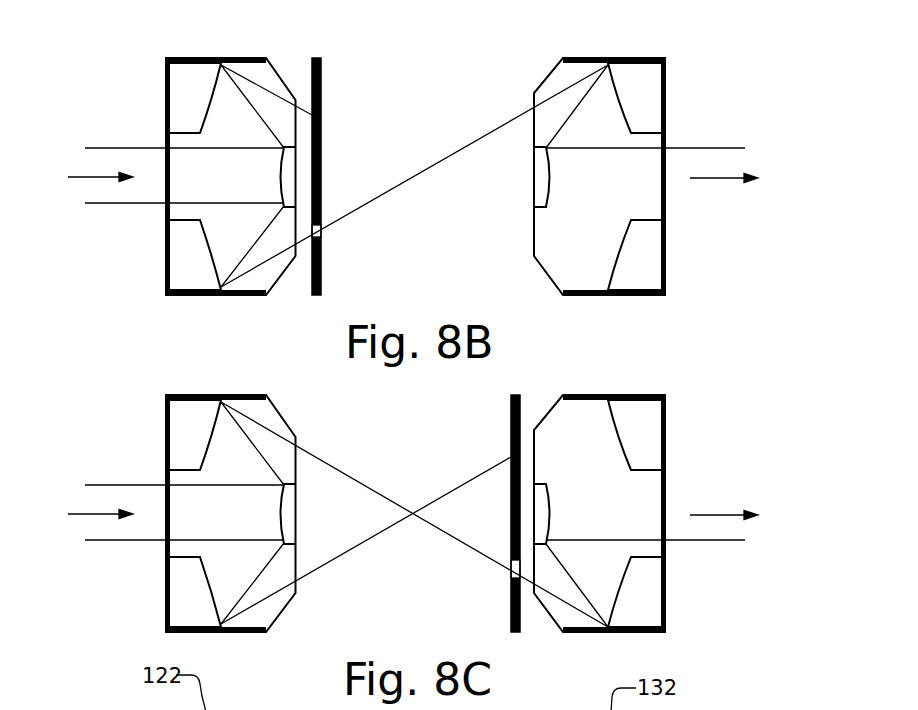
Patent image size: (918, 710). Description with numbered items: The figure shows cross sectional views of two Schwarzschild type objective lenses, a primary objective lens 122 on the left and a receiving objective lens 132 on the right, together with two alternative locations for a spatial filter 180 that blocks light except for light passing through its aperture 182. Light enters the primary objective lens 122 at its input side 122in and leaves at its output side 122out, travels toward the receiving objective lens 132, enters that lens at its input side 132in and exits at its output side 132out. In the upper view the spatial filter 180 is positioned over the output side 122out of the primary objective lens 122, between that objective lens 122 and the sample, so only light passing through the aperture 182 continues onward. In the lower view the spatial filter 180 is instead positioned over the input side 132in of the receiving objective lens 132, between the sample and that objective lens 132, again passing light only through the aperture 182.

In FIG. 8B, the primary objective lens 122 is at (228, 58).
In FIG. 8C, the primary objective lens 122 is at (228, 395).
In FIG. 8B, the receiving objective lens 132 is at (592, 58).
In FIG. 8C, the receiving objective lens 132 is at (597, 395).
In FIG. 8B, the spatial filter 180 is at (321, 88).
In FIG. 8C, the spatial filter 180 is at (511, 452).
In FIG. 8B, the aperture 182 is at (322, 233).
In FIG. 8C, the aperture 182 is at (511, 578).
In FIG. 8B, the input side of the primary objective lens 122in is at (145, 224).
In FIG. 8C, the input side of the primary objective lens 122in is at (145, 561).
In FIG. 8B, the output side of the primary objective lens 122out is at (327, 148).
In FIG. 8C, the output side of the primary objective lens 122out is at (317, 463).
In FIG. 8B, the input side of the receiving objective lens 132in is at (522, 207).
In FIG. 8C, the input side of the receiving objective lens 132in is at (503, 538).
In FIG. 8B, the output side of the receiving objective lens 132out is at (687, 123).
In FIG. 8C, the output side of the receiving objective lens 132out is at (685, 463).